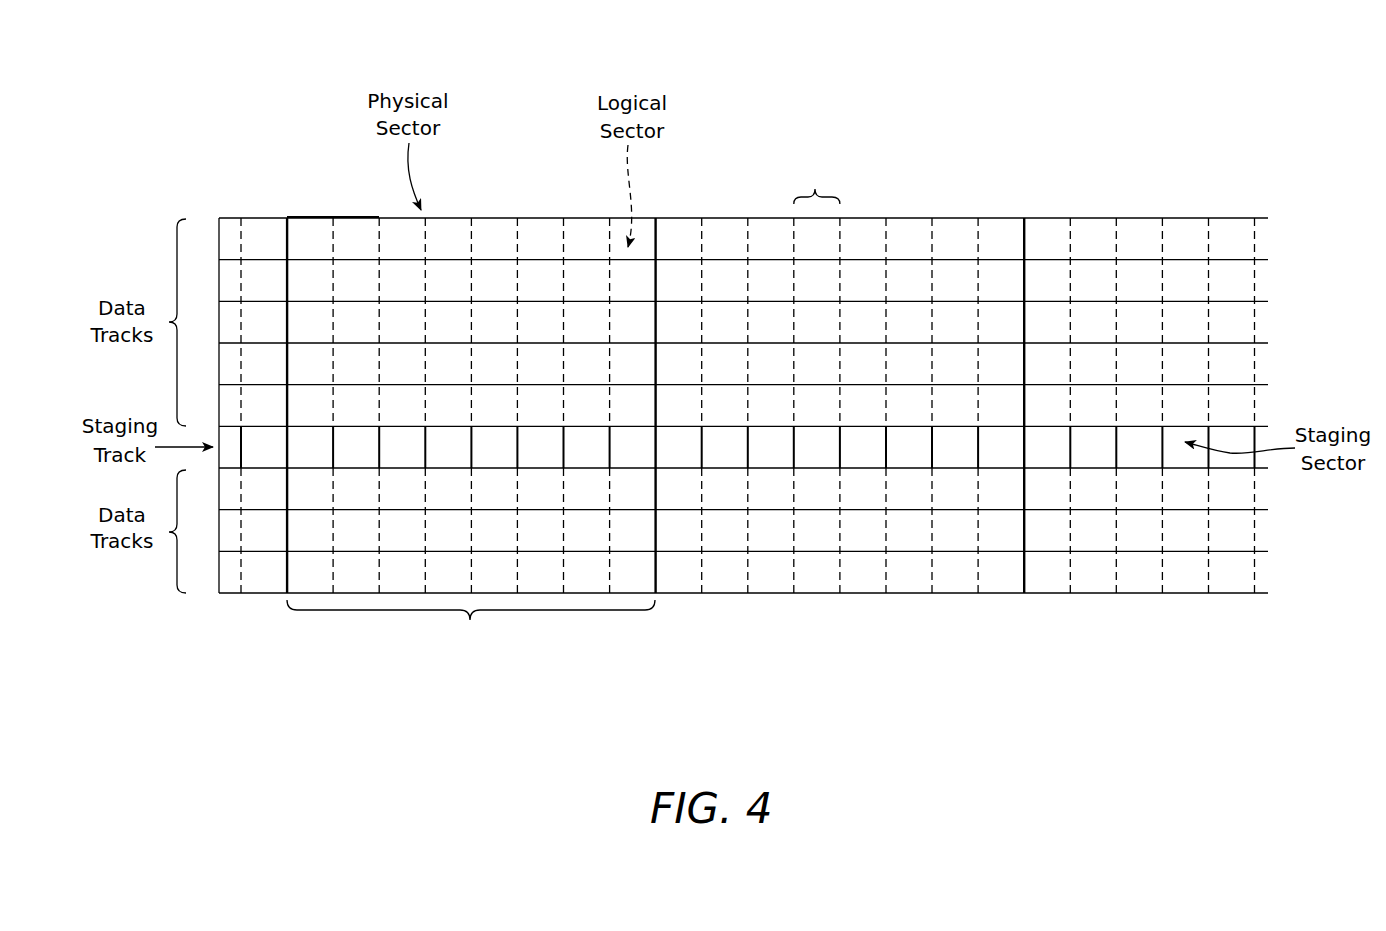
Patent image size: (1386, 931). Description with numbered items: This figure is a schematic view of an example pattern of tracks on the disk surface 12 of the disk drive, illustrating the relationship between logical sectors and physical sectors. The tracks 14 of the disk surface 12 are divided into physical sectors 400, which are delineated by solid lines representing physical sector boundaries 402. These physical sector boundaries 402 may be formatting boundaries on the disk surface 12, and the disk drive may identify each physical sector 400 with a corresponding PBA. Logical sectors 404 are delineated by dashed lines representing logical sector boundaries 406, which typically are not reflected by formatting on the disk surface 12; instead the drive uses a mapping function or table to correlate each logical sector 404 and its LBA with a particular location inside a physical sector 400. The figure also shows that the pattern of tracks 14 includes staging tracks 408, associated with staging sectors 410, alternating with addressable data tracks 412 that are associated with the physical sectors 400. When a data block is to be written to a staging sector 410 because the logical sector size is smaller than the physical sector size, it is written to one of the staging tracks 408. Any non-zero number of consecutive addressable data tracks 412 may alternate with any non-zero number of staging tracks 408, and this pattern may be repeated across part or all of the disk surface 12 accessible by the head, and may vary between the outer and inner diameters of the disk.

The disk surface 12 is at (1038, 57).
The tracks 14 is at (1247, 531).
The physical sector 400 is at (471, 625).
The physical sector boundary 402 is at (657, 572).
The logical sector 404 is at (817, 181).
The logical sector boundary 406 is at (933, 237).
The staging track 408 is at (160, 468).
The staging sector 410 is at (1135, 459).
The addressable data track 412 is at (168, 577).